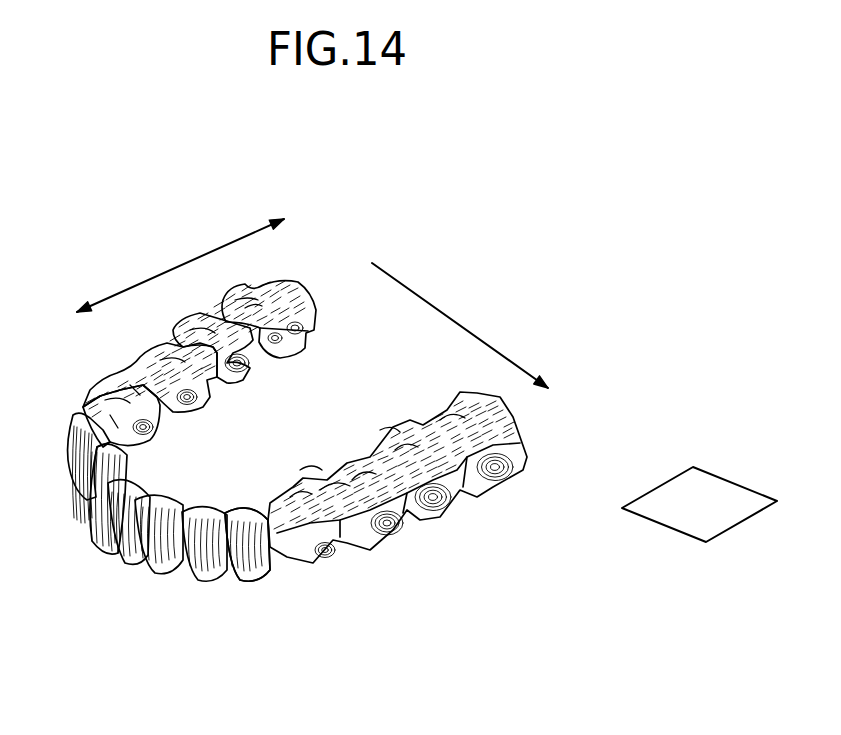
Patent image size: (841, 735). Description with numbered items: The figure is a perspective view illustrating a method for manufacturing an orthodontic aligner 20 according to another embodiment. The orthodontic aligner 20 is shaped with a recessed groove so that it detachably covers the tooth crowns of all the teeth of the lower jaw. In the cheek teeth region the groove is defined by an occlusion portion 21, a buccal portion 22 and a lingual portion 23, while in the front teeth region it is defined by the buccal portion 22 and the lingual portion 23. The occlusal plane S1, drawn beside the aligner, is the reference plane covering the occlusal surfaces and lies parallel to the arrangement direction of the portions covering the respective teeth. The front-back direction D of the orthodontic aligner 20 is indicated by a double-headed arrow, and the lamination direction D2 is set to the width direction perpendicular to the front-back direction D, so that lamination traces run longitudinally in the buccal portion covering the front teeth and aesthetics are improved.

The orthodontic aligner 20 is at (330, 477).
The occlusion portion 21 is at (334, 498).
The buccal portion 22 is at (242, 558).
The lingual portion 23 is at (147, 426).
The occlusal plane S1 is at (703, 504).
The front-back direction D is at (180, 265).
The lamination direction D2 is at (460, 325).